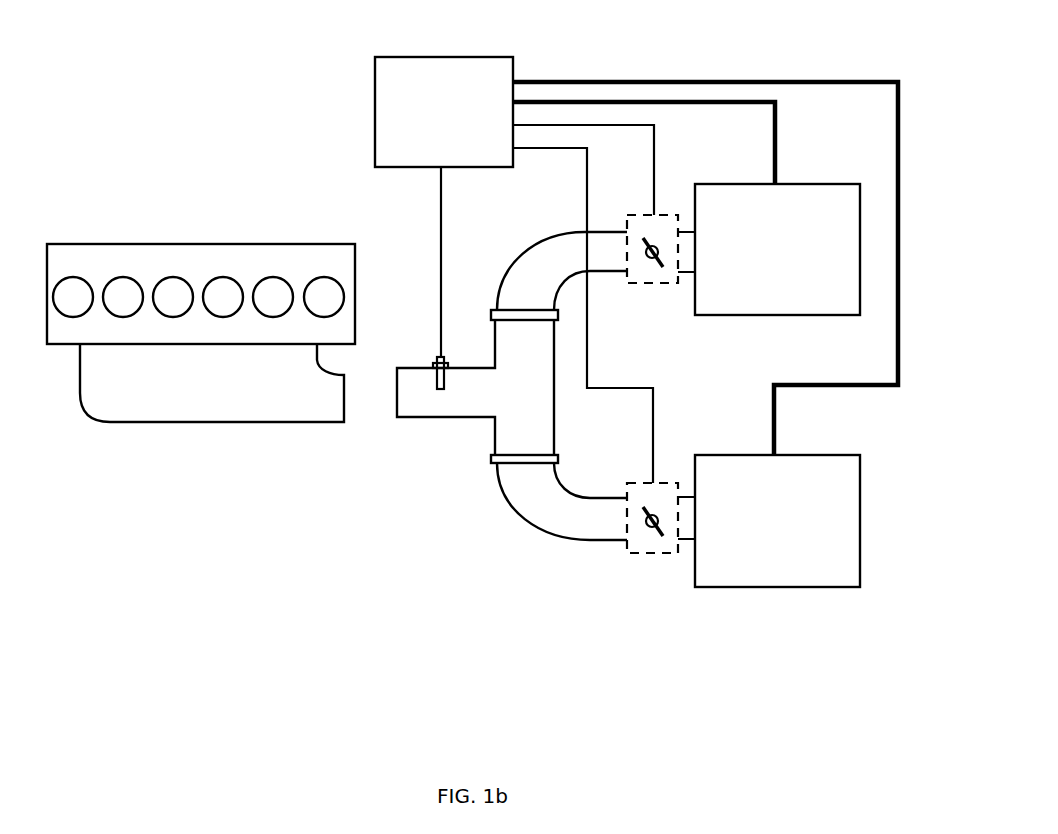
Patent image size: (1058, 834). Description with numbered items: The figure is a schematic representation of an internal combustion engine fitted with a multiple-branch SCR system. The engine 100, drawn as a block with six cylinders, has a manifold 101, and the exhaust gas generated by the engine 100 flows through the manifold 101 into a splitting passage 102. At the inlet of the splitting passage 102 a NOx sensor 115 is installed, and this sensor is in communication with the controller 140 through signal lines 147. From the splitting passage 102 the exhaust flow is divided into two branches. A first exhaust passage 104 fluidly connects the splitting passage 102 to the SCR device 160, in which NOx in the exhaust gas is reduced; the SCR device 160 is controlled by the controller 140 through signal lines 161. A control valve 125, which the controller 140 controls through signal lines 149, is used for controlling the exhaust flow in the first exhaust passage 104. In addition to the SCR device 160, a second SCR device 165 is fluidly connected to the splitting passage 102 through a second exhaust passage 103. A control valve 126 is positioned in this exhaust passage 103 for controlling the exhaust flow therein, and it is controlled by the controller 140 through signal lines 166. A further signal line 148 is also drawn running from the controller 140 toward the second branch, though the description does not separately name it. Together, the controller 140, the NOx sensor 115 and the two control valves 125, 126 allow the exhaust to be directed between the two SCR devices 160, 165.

The engine 100 is at (141, 236).
The manifold 101 is at (200, 422).
The splitting passage 102 is at (447, 417).
The exhaust passage 103 is at (535, 527).
The first exhaust passage 104 is at (525, 250).
The NOx sensor 115 is at (437, 362).
The control valve 125 is at (658, 290).
The control valve 126 is at (652, 553).
The controller 140 is at (375, 111).
The signal lines 147 is at (441, 220).
The second valve control line 148 is at (587, 200).
The signal lines 149 is at (654, 178).
The SCR device 160 is at (772, 326).
The signal lines 161 is at (788, 152).
The second SCR device 165 is at (758, 598).
The signal lines 166 is at (663, 70).